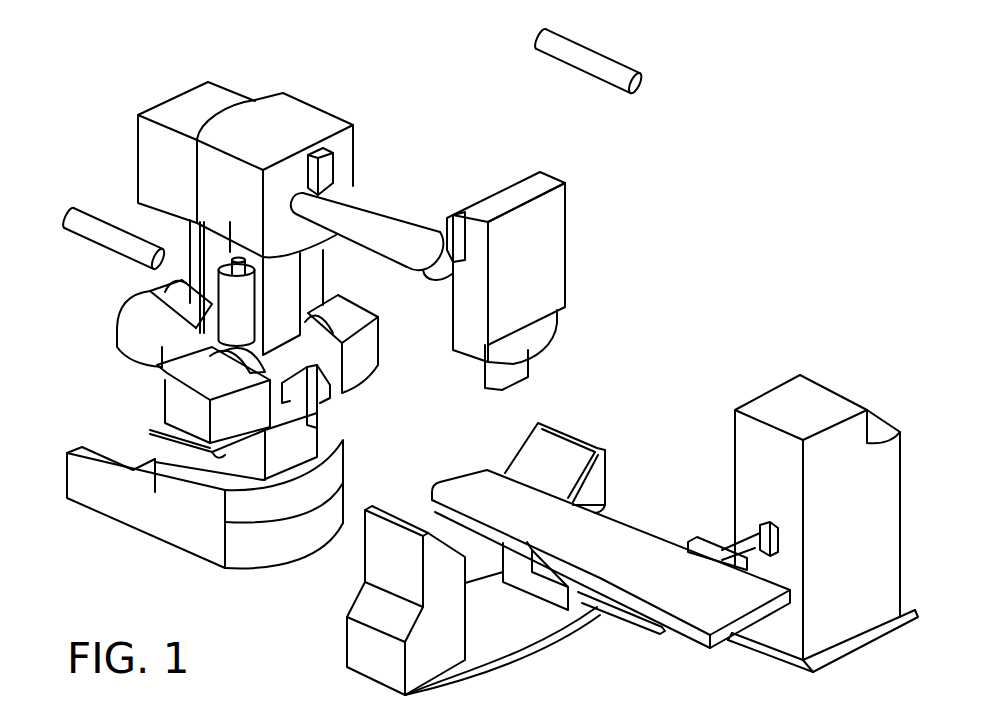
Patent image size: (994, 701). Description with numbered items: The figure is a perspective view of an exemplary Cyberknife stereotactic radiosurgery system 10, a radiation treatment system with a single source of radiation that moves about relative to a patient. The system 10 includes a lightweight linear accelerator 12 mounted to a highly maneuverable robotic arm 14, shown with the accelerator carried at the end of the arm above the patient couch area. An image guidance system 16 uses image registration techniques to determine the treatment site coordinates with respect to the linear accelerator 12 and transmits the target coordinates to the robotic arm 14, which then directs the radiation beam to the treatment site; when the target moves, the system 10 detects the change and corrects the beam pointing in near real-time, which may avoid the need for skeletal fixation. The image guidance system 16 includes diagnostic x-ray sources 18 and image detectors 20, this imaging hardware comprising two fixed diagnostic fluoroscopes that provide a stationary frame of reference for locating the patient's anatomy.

The stereotactic radiosurgery system 10 is at (726, 170).
The linear accelerator 12 is at (573, 210).
The robotic arm 14 is at (297, 72).
The image guidance system 16 is at (603, 410).
The diagnostic x-ray sources 18 is at (577, 42).
The image detectors 20 is at (590, 452).